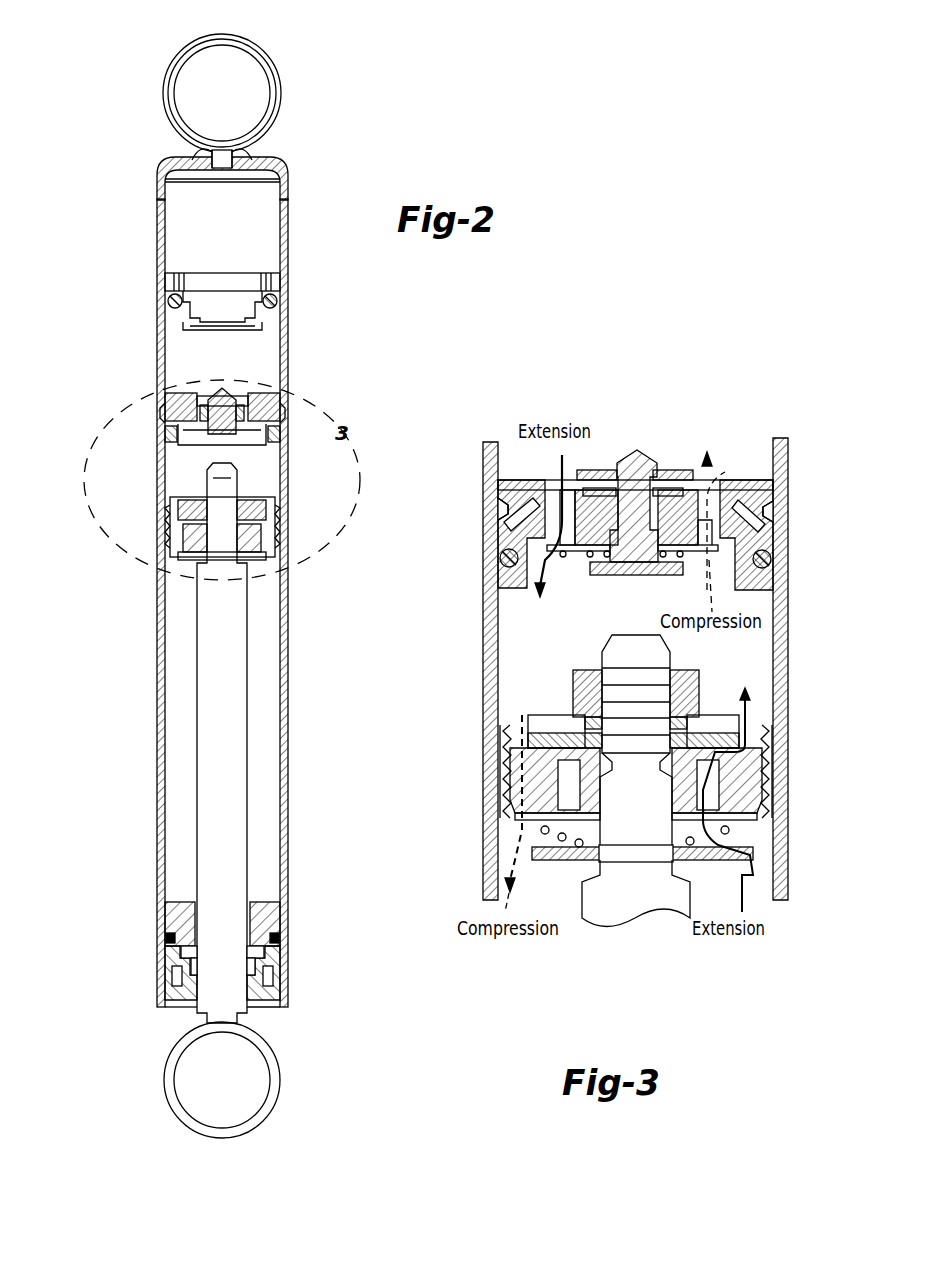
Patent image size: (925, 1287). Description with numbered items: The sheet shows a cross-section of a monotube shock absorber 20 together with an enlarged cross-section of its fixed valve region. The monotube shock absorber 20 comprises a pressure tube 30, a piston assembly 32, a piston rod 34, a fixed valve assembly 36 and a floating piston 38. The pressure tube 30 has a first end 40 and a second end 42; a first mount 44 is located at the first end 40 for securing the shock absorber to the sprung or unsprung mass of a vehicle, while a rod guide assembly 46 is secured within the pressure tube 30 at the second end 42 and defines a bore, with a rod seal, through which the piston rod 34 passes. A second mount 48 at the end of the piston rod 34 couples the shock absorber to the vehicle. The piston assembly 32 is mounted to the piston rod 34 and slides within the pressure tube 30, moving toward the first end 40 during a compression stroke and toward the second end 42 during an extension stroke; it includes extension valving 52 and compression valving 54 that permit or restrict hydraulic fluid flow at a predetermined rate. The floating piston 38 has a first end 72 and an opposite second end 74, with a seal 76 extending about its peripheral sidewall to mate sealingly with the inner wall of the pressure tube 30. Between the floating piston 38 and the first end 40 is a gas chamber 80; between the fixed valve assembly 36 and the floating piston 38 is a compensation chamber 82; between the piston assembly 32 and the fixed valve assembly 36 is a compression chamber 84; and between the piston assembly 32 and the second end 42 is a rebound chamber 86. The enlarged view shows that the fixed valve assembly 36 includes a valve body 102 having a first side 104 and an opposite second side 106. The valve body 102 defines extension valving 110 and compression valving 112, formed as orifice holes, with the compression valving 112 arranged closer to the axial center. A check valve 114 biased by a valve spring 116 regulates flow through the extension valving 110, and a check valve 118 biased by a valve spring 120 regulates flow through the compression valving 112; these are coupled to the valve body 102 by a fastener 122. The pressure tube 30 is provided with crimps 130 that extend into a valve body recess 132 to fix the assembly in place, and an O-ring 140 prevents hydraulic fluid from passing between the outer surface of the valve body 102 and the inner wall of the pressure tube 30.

In FIG. 2, the monotube shock absorber 20 is at (95, 45).
In FIG. 2, the pressure tube 30 is at (157, 215).
In FIG. 3, the pressure tube 30 is at (483, 458).
In FIG. 2, the piston assembly 32 is at (221, 547).
In FIG. 2, the piston rod 34 is at (210, 752).
In FIG. 2, the fixed valve assembly 36 is at (243, 409).
In FIG. 3, the fixed valve assembly 36 is at (770, 497).
In FIG. 2, the floating piston 38 is at (255, 273).
In FIG. 2, the first end 40 is at (266, 157).
In FIG. 2, the second end 42 is at (284, 1011).
In FIG. 2, the first mount 44 is at (211, 38).
In FIG. 2, the rod guide assembly 46 is at (265, 996).
In FIG. 2, the second mount 48 is at (224, 1139).
In FIG. 2, the extension valving 52 is at (200, 535).
In FIG. 3, the extension valving 52 is at (712, 790).
In FIG. 2, the compression valving 54 is at (167, 521).
In FIG. 3, the compression valving 54 is at (500, 779).
In FIG. 2, the first end 72 is at (168, 273).
In FIG. 2, the second end 74 is at (262, 343).
In FIG. 2, the seal 76 is at (278, 305).
In FIG. 2, the gas chamber 80 is at (178, 232).
In FIG. 2, the compensation chamber 82 is at (170, 366).
In FIG. 2, the compression chamber 84 is at (172, 488).
In FIG. 2, the rebound chamber 86 is at (166, 716).
In FIG. 3, the valve body 102 is at (505, 478).
In FIG. 3, the first side 104 is at (516, 480).
In FIG. 3, the second side 106 is at (508, 590).
In FIG. 3, the extension valving 110 is at (567, 548).
In FIG. 2, the compression valving 112 is at (238, 433).
In FIG. 3, the compression valving 112 is at (626, 445).
In FIG. 3, the check valve 114 is at (597, 560).
In FIG. 3, the valve spring 116 is at (560, 560).
In FIG. 3, the check valve 118 is at (600, 478).
In FIG. 3, the valve spring 120 is at (656, 478).
In FIG. 3, the fastener 122 is at (638, 455).
In FIG. 3, the crimps 130 is at (500, 510).
In FIG. 3, the valve body recess 132 is at (502, 562).
In FIG. 2, the O-ring 140 is at (281, 437).
In FIG. 3, the O-ring 140 is at (771, 565).